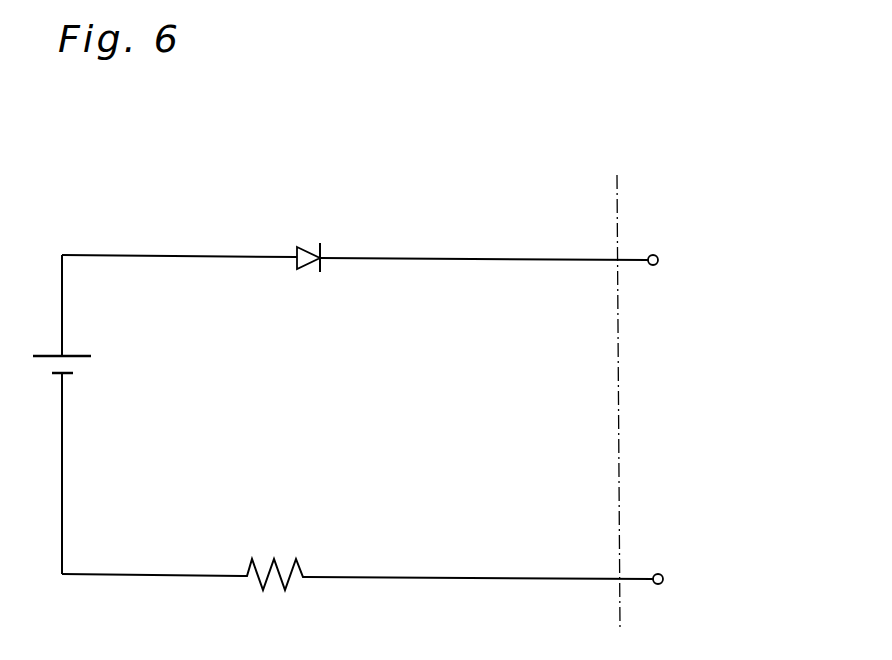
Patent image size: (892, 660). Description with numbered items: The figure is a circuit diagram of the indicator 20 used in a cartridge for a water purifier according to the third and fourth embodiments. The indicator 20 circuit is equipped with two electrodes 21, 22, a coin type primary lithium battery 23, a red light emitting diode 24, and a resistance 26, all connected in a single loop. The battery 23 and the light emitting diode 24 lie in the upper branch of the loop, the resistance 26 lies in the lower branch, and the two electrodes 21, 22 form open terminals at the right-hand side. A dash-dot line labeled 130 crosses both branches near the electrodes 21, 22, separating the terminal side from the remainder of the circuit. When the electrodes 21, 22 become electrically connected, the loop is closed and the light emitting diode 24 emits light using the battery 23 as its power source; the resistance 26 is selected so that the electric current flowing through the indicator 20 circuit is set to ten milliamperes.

The indicator 20 is at (210, 224).
The electrode 21 is at (659, 260).
The electrode 22 is at (664, 579).
The coin type primary lithium battery 23 is at (88, 365).
The red light emitting diode 24 is at (305, 238).
The resistance 26 is at (283, 553).
The boundary line 130 is at (617, 380).